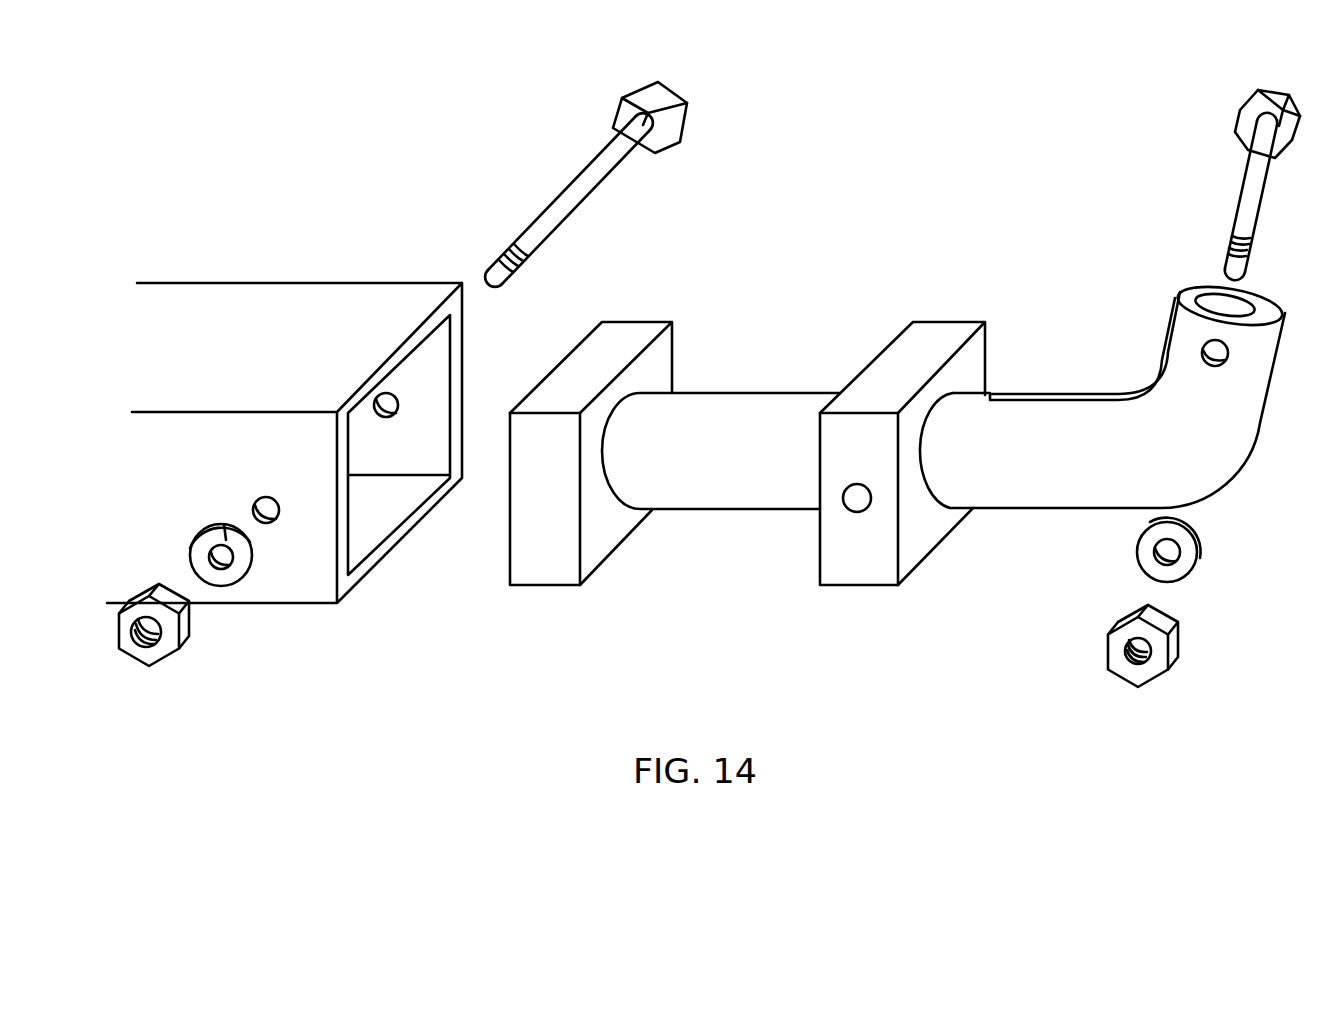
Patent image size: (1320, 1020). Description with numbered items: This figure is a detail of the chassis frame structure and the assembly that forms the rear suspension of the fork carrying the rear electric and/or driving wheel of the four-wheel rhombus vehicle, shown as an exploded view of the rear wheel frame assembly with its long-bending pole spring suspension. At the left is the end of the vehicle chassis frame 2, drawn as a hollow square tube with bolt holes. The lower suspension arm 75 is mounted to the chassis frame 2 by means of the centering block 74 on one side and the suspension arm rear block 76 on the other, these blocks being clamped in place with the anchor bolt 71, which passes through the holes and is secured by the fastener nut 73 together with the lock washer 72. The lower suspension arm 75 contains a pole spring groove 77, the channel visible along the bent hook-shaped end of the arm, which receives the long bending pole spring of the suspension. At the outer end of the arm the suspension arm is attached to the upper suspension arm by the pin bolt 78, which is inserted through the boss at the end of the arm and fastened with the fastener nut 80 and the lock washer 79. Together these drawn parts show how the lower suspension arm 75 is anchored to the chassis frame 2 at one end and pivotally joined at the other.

The chassis frame 2 is at (268, 300).
The anchor bolt 71 is at (572, 185).
The lock washer 72 is at (228, 580).
The fastener nut 73 is at (155, 655).
The centering block 74 is at (637, 320).
The lower suspension arm 75 is at (742, 402).
The suspension arm rear block 76 is at (945, 330).
The pole spring groove 77 is at (1088, 395).
The pin bolt 78 is at (1253, 175).
The lock washer 79 is at (1140, 560).
The fastener nut 80 is at (1103, 653).